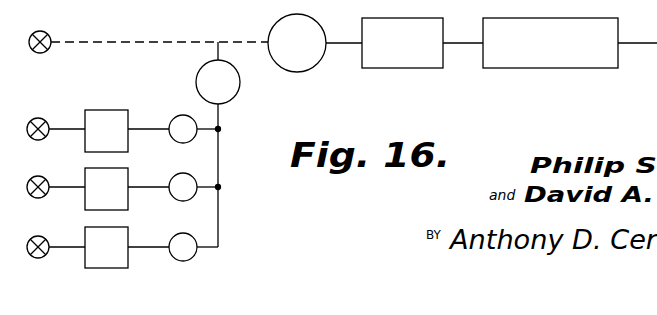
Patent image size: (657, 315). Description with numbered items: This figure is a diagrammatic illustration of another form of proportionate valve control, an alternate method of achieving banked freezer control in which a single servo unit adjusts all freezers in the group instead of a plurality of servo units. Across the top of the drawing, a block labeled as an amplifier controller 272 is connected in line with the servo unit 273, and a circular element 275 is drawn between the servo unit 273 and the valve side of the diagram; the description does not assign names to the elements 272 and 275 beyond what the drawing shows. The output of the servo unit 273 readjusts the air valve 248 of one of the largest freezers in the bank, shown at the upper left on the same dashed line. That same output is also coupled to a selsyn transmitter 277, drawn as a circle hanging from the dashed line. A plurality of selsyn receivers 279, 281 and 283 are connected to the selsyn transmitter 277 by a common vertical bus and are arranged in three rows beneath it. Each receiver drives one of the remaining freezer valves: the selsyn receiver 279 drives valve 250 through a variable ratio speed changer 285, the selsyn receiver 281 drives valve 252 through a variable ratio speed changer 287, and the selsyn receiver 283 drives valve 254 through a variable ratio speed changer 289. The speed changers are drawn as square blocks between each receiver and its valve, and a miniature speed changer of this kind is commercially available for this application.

The air valve 248 is at (41, 31).
The valve 250 is at (54, 99).
The valve 252 is at (50, 167).
The valve 254 is at (52, 226).
The amplifier controller 272 is at (575, 68).
The servo unit 273 is at (408, 68).
The motor 275 is at (297, 72).
The selsyn transmitter 277 is at (198, 74).
The selsyn receiver 279 is at (178, 118).
The selsyn receiver 281 is at (188, 180).
The selsyn receiver 283 is at (191, 258).
The variable ratio speed changer 285 is at (106, 110).
The variable ratio speed changer 287 is at (122, 200).
The variable ratio speed changer 289 is at (89, 268).